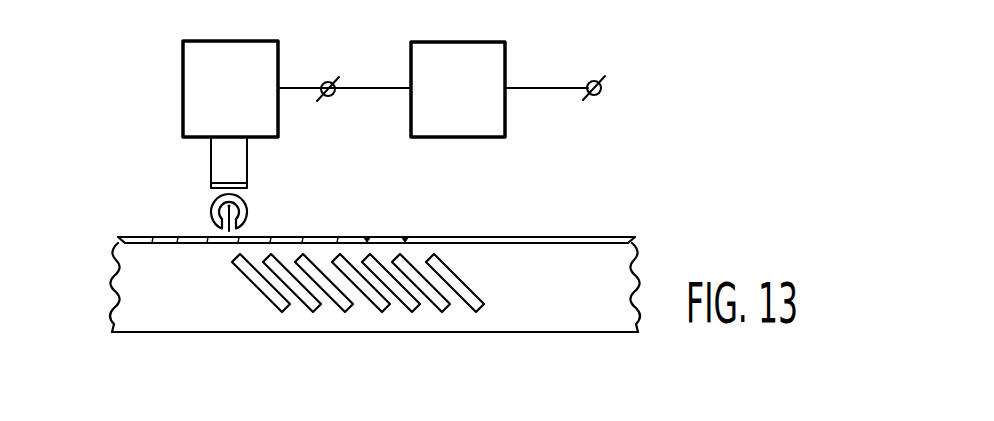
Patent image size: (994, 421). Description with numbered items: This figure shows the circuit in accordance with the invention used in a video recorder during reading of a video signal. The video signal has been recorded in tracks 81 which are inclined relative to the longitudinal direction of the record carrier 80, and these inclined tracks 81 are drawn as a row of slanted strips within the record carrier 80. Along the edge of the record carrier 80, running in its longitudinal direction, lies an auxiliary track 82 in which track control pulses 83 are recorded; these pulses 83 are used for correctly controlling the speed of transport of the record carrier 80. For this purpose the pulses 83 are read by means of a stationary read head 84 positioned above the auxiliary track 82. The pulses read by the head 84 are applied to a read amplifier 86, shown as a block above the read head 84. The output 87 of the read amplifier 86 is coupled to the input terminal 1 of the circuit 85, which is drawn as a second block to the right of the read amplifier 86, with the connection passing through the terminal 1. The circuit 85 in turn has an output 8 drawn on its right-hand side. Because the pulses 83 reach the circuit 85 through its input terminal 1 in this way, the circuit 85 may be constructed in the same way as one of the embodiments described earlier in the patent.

The input terminal 1 is at (330, 96).
The output 8 is at (601, 84).
The record carrier 80 is at (533, 332).
The tracks 81 is at (284, 308).
The auxiliary track 82 is at (615, 237).
The track control pulses 83 is at (365, 238).
The stationary read head 84 is at (211, 212).
The circuit 85 is at (447, 42).
The read amplifier 86 is at (183, 79).
The output 87 is at (278, 86).